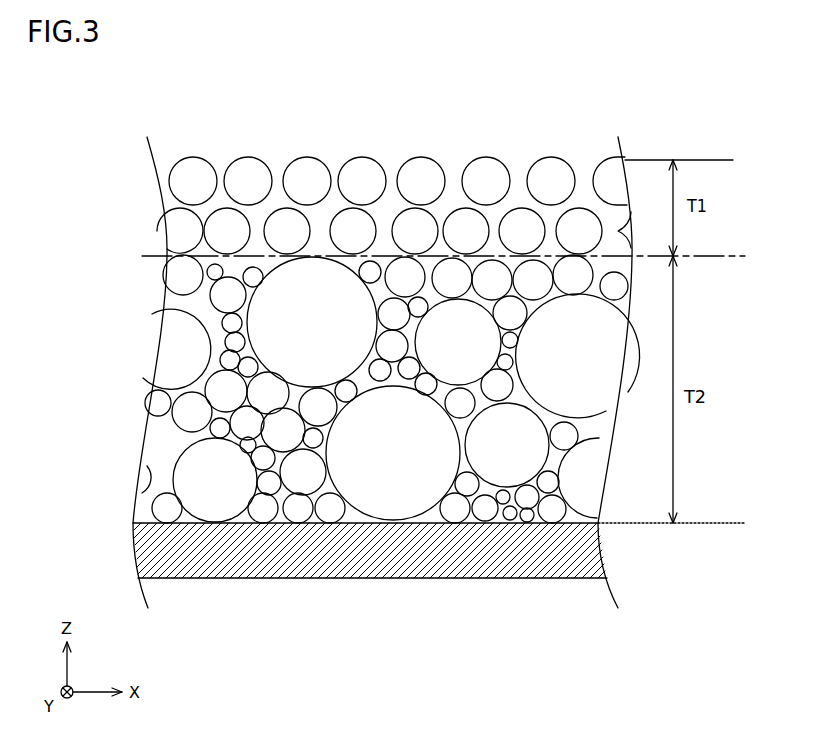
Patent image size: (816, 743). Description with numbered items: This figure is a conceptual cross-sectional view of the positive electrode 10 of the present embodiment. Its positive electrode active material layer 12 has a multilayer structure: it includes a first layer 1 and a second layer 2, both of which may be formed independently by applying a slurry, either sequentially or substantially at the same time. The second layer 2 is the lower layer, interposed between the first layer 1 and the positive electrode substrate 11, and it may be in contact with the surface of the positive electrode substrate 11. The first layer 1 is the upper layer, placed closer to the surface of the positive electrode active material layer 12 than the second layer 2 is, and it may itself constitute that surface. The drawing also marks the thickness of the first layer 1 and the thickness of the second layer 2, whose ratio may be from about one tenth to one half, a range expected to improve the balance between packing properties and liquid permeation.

The laminate / electrode body 10 is at (107, 122).
The positive electrode active material layer 12 is at (92, 153).
The first layer 1 is at (122, 158).
The second layer 2 is at (122, 263).
The positive electrode substrate 11 is at (408, 578).